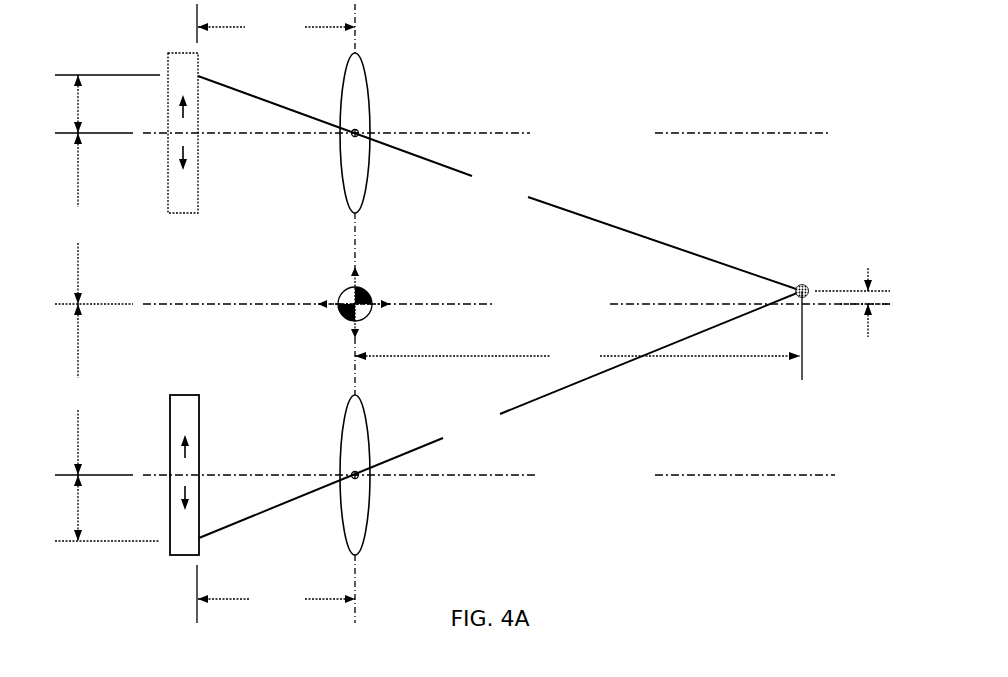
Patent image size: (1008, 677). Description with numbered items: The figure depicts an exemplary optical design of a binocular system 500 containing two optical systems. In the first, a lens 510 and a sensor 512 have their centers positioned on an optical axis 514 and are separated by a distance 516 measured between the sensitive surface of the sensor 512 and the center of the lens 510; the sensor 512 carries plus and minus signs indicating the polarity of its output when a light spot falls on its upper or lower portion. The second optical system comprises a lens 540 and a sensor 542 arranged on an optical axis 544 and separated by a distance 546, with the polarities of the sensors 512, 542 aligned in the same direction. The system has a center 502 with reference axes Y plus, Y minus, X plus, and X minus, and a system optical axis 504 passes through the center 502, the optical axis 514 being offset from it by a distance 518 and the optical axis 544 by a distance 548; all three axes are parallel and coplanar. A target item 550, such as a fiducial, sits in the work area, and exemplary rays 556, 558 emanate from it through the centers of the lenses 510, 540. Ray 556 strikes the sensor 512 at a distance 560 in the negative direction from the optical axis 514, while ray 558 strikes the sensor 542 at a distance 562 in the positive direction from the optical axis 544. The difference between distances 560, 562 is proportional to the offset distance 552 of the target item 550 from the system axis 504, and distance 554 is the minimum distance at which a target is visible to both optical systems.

The binocular system 500 is at (659, 70).
The center 502 is at (385, 279).
The system optical axis 504 is at (516, 304).
The lens 510 is at (376, 135).
The sensor 512 is at (185, 148).
The optical axis 514 is at (486, 133).
The distance 516 is at (276, 23).
The distance 518 is at (94, 218).
The lens 540 is at (376, 480).
The sensor 542 is at (188, 460).
The optical axis 544 is at (489, 475).
The distance 546 is at (276, 594).
The distance 548 is at (94, 389).
The target item 550 is at (812, 268).
The offset distance 552 is at (855, 317).
The distance 554 is at (577, 356).
The ray 556 is at (500, 183).
The ray 558 is at (500, 414).
The distance 560 is at (94, 104).
The distance 562 is at (94, 508).